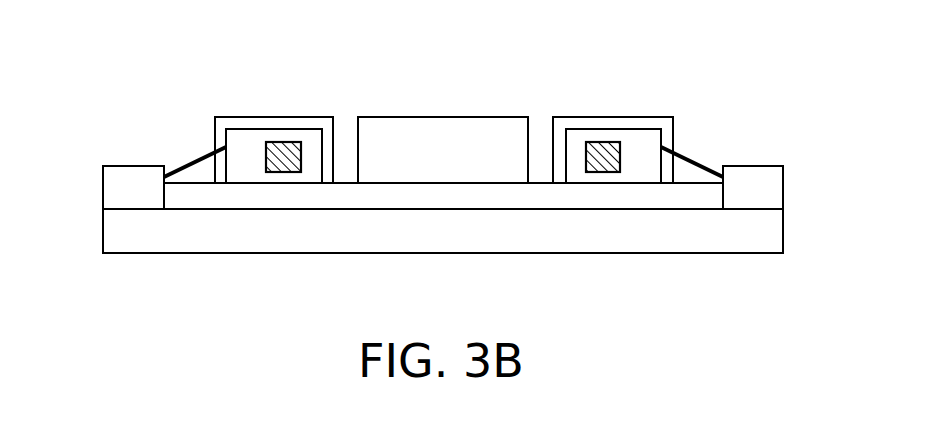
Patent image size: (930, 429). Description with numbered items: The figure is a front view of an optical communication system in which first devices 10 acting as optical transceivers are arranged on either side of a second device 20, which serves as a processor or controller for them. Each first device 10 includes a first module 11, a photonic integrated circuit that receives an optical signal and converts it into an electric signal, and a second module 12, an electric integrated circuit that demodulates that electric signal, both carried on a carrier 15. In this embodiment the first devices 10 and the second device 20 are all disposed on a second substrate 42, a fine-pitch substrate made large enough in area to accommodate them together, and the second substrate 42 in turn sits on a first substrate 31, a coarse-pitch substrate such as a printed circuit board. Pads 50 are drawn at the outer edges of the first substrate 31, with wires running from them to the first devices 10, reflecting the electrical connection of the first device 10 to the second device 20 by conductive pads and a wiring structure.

The first device 10 is at (444, 180).
The first module 11 is at (641, 129).
The second module 12 is at (603, 172).
The carrier 15 is at (590, 117).
The second device 20 is at (425, 168).
The first substrate 31 is at (117, 230).
The second substrate 42 is at (443, 195).
The electrode pad 50 is at (117, 185).